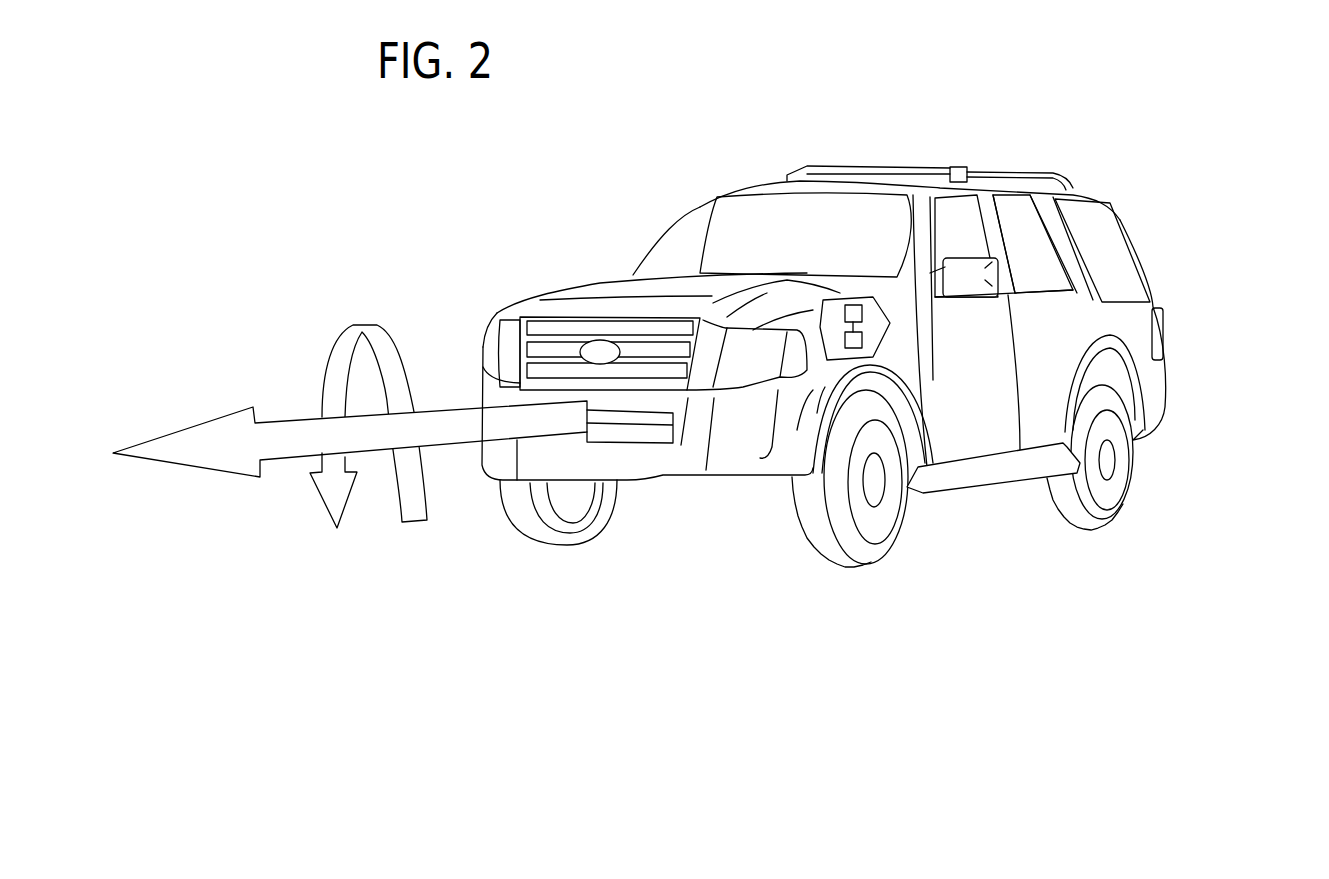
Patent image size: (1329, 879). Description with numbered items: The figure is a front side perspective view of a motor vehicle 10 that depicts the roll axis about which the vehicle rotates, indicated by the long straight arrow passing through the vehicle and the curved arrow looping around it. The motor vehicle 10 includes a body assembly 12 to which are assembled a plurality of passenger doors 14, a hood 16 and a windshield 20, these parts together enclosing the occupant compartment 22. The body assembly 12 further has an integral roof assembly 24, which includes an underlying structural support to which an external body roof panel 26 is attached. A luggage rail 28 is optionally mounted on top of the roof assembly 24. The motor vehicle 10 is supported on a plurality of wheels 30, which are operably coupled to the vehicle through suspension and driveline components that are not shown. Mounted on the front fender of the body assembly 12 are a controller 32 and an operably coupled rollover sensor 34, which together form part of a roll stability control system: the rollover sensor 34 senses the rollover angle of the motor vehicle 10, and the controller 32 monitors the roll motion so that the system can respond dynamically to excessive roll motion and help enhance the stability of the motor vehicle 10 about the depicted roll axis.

The motor vehicle 10 is at (1163, 162).
The body assembly 12 is at (1137, 308).
The passenger doors 14 is at (965, 442).
The hood 16 is at (598, 290).
The windshield 20 is at (703, 242).
The occupant compartment 22 is at (950, 232).
The roof assembly 24 is at (995, 178).
The external body roof panel 26 is at (828, 183).
The luggage rail 28 is at (1043, 177).
The wheels 30 is at (525, 522).
The controller 32 is at (862, 312).
The rollover sensor 34 is at (862, 338).